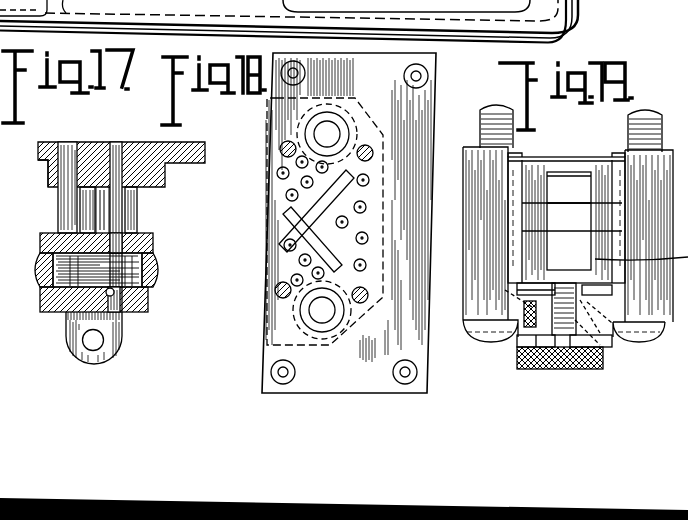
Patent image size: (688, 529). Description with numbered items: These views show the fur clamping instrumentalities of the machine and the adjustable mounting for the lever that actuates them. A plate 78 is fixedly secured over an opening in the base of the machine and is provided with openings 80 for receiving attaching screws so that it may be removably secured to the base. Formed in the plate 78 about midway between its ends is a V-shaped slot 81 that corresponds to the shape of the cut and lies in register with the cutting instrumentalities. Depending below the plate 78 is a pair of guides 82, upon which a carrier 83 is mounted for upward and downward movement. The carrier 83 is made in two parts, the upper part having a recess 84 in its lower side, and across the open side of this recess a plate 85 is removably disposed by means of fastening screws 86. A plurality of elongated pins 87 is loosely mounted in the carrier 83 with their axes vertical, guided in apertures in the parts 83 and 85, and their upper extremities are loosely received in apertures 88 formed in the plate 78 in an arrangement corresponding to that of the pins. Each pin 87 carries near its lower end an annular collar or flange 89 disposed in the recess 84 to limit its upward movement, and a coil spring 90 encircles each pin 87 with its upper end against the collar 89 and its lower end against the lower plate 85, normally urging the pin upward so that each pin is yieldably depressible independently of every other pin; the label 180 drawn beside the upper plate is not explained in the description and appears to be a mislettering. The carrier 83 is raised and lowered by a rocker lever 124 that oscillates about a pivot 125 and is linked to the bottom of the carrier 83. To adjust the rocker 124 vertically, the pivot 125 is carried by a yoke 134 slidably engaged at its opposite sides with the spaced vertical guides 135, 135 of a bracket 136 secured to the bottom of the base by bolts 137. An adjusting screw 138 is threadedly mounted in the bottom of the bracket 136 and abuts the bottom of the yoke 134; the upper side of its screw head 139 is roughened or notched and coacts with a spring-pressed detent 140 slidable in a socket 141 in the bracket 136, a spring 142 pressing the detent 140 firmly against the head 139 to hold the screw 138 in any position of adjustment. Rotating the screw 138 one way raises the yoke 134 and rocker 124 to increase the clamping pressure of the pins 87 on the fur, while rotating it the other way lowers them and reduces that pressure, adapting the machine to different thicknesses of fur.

In FIG. 17, the plate 78 is at (42, 164).
In FIG. 18, the plate 78 is at (440, 95).
In FIG. 18, the openings 80 is at (426, 70).
In FIG. 17, the V-shaped slot 81 is at (80, 138).
In FIG. 18, the V-shaped slot 81 is at (282, 250).
In FIG. 17, the guides 82 is at (100, 213).
In FIG. 18, the guides 82 is at (327, 135).
In FIG. 17, the carrier 83 is at (150, 246).
In FIG. 18, the carrier 83 is at (287, 212).
In FIG. 17, the recess 84 is at (140, 277).
In FIG. 17, the plate 85 is at (145, 308).
In FIG. 18, the fastening screws 86 is at (282, 151).
In FIG. 17, the pins 87 is at (98, 200).
In FIG. 18, the pins 87 is at (350, 205).
In FIG. 17, the apertures 88 is at (125, 162).
In FIG. 18, the apertures 88 is at (290, 195).
In FIG. 17, the collar 89 is at (148, 258).
In FIG. 17, the coil spring 90 is at (118, 291).
In FIG. 17, the flange 180 is at (174, 152).
In FIG. 19, the rocker lever 124 is at (572, 236).
In FIG. 19, the pivot 125 is at (570, 210).
In FIG. 19, the yoke 134 is at (641, 252).
In FIG. 19, the vertical guides 135 is at (625, 155).
In FIG. 19, the bracket 136 is at (568, 244).
In FIG. 19, the bolts 137 is at (483, 128).
In FIG. 19, the adjusting screw 138 is at (605, 348).
In FIG. 19, the screw head 139 is at (585, 369).
In FIG. 19, the detent 140 is at (520, 345).
In FIG. 19, the socket 141 is at (517, 290).
In FIG. 19, the spring 142 is at (522, 314).